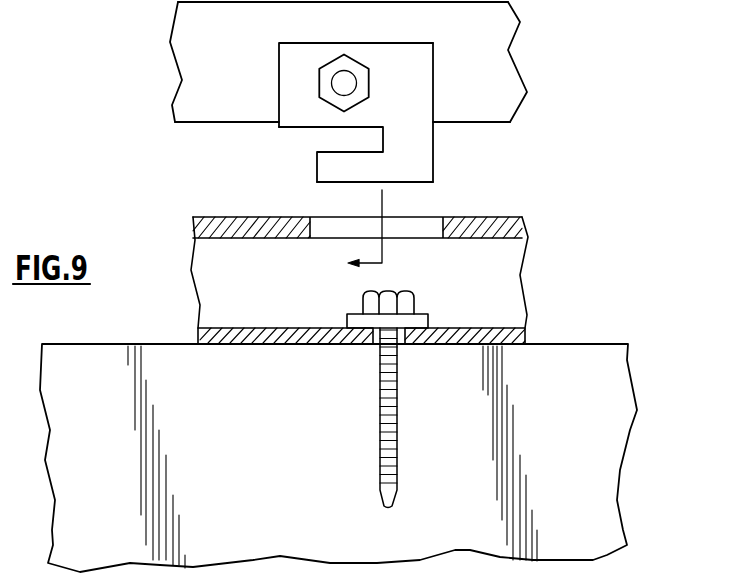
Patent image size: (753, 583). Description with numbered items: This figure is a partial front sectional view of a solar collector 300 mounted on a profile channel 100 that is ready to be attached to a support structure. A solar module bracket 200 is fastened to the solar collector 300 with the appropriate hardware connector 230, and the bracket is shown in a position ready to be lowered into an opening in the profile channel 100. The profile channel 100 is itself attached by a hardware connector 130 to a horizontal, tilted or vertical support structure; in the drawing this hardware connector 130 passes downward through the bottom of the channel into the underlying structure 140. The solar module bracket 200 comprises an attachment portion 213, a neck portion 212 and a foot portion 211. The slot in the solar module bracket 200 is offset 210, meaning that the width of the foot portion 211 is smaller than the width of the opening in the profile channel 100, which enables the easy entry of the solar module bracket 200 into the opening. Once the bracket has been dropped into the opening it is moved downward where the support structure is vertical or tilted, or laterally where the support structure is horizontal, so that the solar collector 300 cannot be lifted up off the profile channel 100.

The profile channel 100 is at (540, 221).
The hardware connector 130 is at (345, 300).
The base / mounting surface 140 is at (595, 370).
The solar module bracket 200 is at (343, 96).
The offset 210 is at (306, 159).
The foot portion 211 is at (360, 172).
The neck portion 212 is at (398, 140).
The attachment portion 213 is at (303, 60).
The hardware connector 230 is at (375, 62).
The solar collector 300 is at (162, 37).